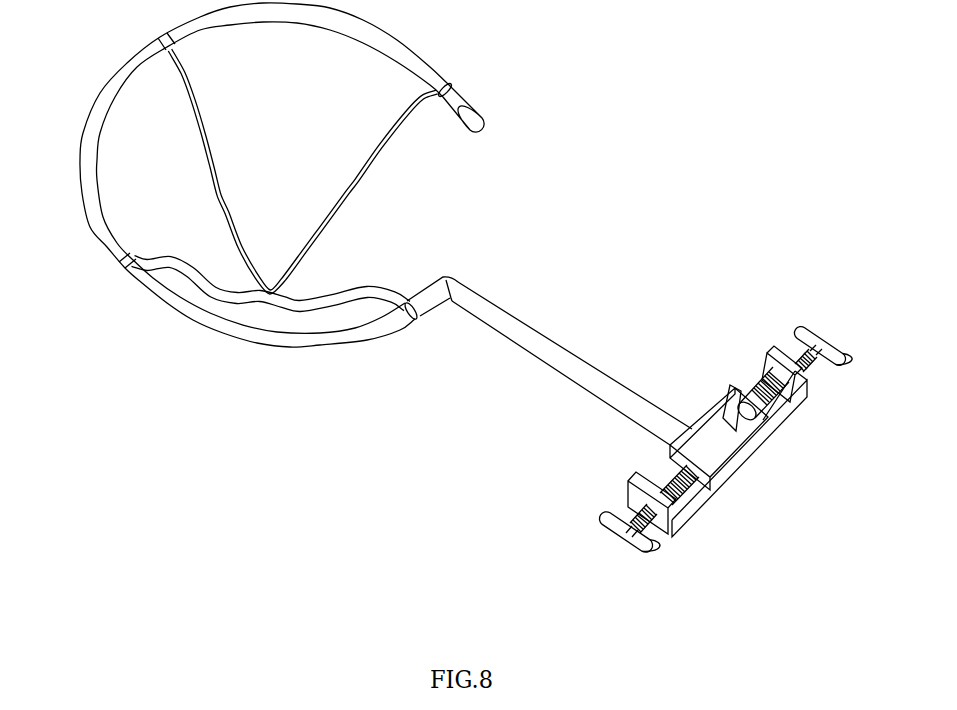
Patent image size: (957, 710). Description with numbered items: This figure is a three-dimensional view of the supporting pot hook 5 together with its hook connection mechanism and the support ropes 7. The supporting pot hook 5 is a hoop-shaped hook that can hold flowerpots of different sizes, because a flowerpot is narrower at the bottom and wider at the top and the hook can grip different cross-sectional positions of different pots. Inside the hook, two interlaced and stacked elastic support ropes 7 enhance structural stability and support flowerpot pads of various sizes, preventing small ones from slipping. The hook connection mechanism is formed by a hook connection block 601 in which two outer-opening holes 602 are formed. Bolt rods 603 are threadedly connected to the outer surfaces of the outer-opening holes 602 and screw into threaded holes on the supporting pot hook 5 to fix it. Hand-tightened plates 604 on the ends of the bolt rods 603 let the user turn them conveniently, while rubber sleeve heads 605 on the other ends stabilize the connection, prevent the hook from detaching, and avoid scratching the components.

The supporting pot hook 5 is at (245, 336).
The support rope 7 is at (360, 183).
The hook connection block 601 is at (772, 423).
The outer-opening hole 602 is at (693, 490).
The bolt rod 603 is at (652, 525).
The hand-tightened plate 604 is at (620, 533).
The rubber sleeve head 605 is at (752, 408).